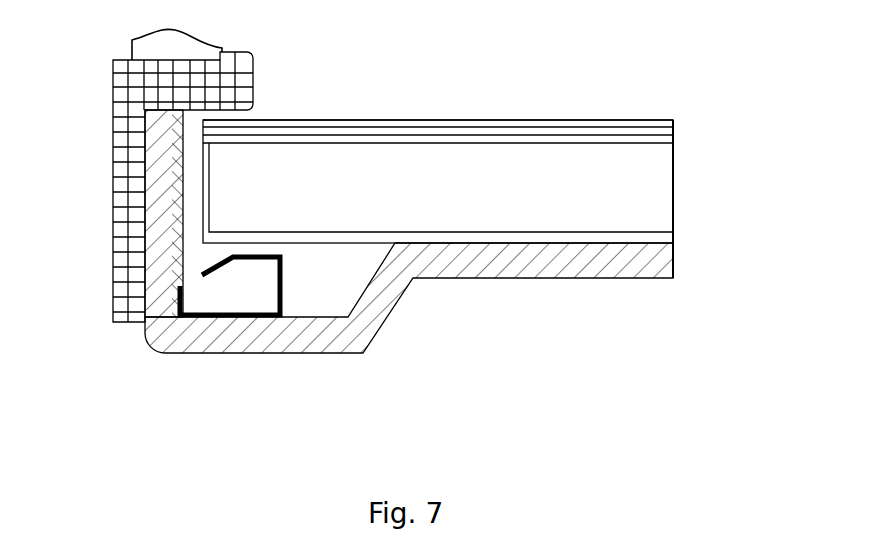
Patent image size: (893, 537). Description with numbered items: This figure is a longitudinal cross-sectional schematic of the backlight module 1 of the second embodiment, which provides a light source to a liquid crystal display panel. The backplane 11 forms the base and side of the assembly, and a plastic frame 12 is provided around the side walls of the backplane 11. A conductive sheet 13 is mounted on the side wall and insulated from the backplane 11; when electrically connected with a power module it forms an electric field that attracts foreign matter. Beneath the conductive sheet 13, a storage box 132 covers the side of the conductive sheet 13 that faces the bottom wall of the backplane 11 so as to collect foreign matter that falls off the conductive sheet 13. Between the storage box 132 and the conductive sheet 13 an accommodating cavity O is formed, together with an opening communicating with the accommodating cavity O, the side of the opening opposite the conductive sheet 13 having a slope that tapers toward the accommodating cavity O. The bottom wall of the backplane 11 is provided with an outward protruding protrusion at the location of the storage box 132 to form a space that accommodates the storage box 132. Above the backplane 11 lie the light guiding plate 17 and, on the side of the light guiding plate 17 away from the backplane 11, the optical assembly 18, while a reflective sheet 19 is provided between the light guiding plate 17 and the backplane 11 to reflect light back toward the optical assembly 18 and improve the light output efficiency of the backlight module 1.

The backlight module 1 is at (486, 42).
The backplane 11 is at (203, 333).
The plastic frame 12 is at (128, 273).
The conductive sheet 13 is at (180, 210).
The storage box 132 is at (280, 297).
The accommodating cavity O is at (225, 300).
The light guiding plate 17 is at (673, 198).
The optical assembly 18 is at (673, 133).
The reflective sheet 19 is at (667, 237).